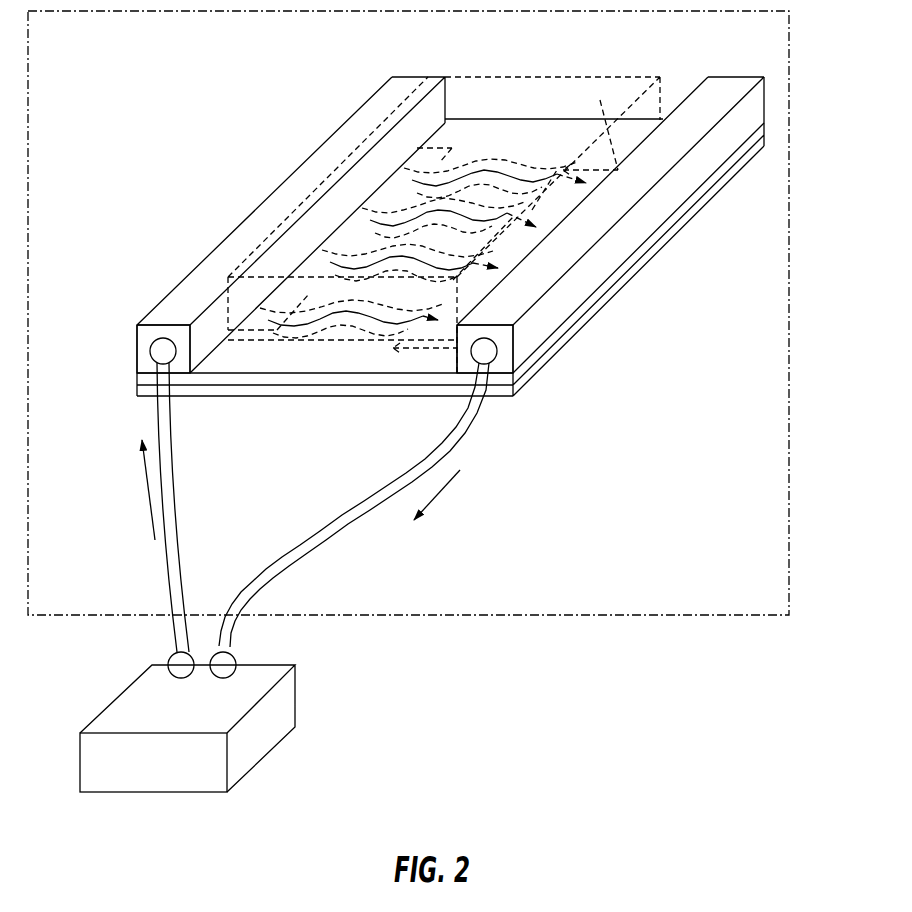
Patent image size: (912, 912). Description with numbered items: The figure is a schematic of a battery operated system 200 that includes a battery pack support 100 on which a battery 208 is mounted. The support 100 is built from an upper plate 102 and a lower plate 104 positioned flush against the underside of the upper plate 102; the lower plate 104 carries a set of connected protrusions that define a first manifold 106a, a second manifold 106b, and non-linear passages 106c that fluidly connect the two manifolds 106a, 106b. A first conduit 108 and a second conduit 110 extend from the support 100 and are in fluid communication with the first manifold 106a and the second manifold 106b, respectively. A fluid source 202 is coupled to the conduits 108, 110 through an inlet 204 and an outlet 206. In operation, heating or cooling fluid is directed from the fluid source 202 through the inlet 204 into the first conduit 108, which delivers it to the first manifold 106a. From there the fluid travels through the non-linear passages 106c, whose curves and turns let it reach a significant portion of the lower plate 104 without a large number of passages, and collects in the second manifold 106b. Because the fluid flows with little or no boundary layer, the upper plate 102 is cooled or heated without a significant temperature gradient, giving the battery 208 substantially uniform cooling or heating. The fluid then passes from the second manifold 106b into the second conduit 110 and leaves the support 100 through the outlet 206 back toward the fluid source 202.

The battery pack support 100 is at (424, 271).
The upper plate 102 is at (218, 362).
The lower plate 104 is at (290, 415).
The first manifold 106a is at (404, 188).
The second manifold 106b is at (553, 207).
The non-linear passages 106c is at (477, 165).
The first conduit 108 is at (200, 240).
The second conduit 110 is at (583, 270).
The battery operated system 200 is at (622, 687).
The fluid source 202 is at (171, 815).
The inlet 204 is at (173, 565).
The outlet 206 is at (305, 558).
The battery 208 is at (570, 70).